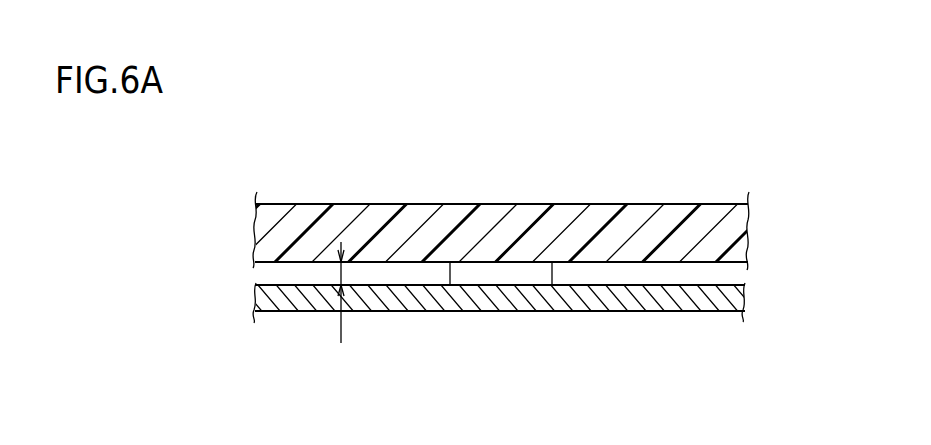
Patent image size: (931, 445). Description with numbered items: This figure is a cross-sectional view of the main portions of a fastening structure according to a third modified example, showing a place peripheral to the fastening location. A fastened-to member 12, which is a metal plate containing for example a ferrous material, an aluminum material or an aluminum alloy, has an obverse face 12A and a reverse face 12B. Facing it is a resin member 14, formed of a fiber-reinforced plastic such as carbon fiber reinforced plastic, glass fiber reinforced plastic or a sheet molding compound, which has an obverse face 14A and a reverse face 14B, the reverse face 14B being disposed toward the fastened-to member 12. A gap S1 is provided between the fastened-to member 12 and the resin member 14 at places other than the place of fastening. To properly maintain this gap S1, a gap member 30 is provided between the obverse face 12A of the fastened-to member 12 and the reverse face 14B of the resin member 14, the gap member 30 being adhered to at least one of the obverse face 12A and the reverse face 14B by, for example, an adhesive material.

The resin member 14 is at (488, 211).
The obverse face 14A is at (278, 205).
The reverse face 14B is at (258, 274).
The gap member 30 is at (503, 275).
The fastened-to member 12 is at (532, 326).
The obverse face 12A is at (714, 285).
The reverse face 12B is at (715, 312).
The gap S1 is at (340, 306).